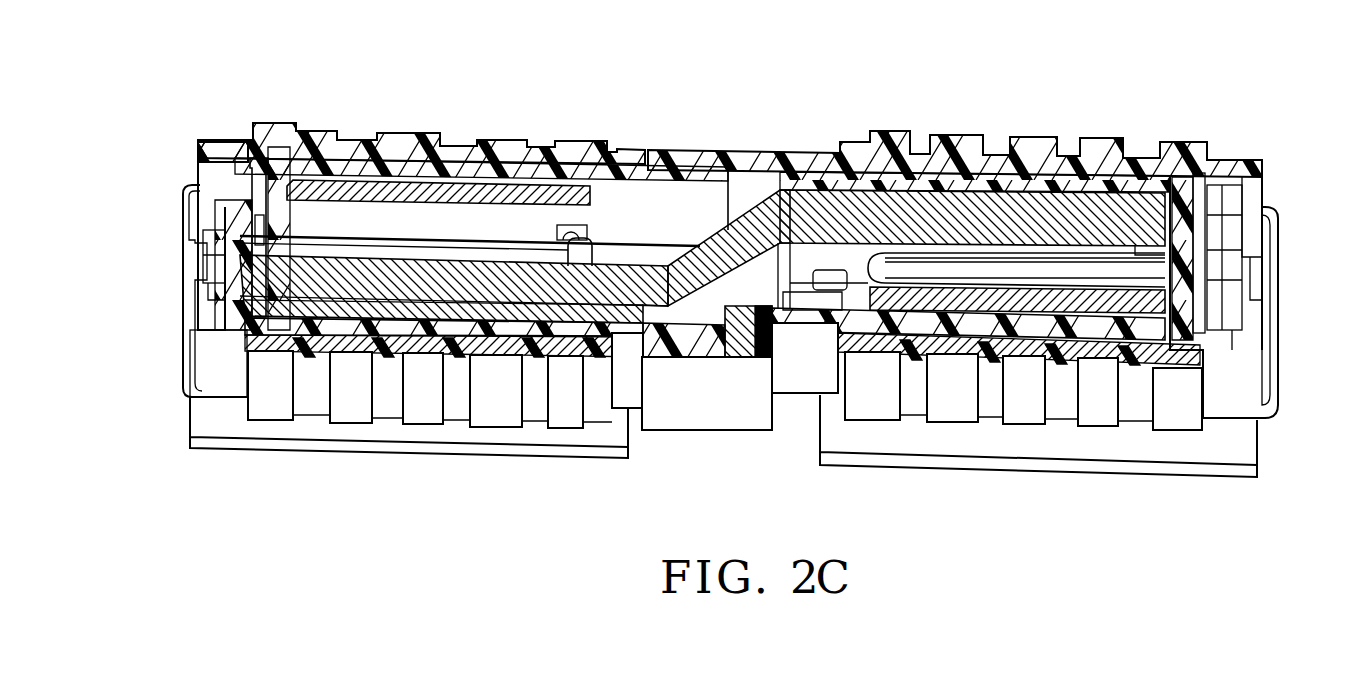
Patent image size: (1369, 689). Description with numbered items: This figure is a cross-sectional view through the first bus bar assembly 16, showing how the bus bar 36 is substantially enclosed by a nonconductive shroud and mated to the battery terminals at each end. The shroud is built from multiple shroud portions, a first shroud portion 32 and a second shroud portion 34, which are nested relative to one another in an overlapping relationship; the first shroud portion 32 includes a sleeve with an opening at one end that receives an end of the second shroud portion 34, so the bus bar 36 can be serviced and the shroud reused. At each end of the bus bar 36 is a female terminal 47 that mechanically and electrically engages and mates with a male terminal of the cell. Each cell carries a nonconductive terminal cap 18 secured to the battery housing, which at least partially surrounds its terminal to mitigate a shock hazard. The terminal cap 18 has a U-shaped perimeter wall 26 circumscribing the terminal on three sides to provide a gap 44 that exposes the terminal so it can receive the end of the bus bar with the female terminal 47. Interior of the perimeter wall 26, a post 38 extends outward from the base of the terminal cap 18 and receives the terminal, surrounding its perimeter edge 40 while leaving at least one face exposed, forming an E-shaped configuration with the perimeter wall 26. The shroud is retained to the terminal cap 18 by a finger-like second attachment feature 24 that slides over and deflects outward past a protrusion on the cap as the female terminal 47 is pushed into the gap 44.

The bus bar assembly 16 is at (1243, 136).
The terminal cap 18 is at (221, 417).
The second attachment feature 24 is at (217, 212).
The perimeter wall 26 is at (340, 395).
The first shroud portion 32 is at (745, 302).
The second shroud portion 34 is at (460, 326).
The bus bar 36 is at (750, 232).
The post 38 is at (376, 243).
The perimeter edge 40 is at (338, 273).
The gap 44 is at (598, 222).
The female terminal 47 is at (320, 186).